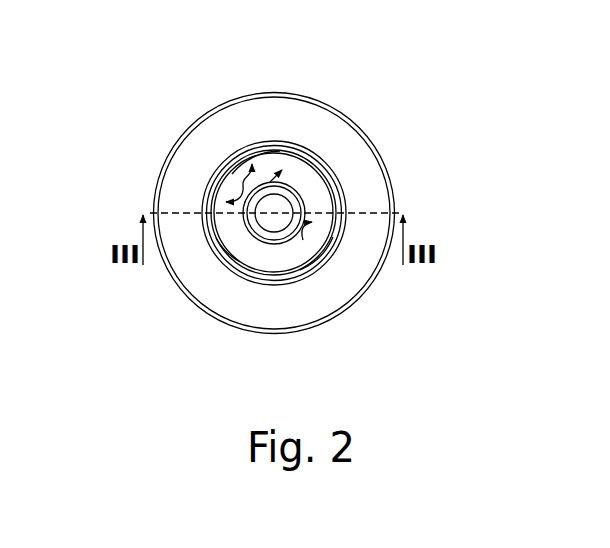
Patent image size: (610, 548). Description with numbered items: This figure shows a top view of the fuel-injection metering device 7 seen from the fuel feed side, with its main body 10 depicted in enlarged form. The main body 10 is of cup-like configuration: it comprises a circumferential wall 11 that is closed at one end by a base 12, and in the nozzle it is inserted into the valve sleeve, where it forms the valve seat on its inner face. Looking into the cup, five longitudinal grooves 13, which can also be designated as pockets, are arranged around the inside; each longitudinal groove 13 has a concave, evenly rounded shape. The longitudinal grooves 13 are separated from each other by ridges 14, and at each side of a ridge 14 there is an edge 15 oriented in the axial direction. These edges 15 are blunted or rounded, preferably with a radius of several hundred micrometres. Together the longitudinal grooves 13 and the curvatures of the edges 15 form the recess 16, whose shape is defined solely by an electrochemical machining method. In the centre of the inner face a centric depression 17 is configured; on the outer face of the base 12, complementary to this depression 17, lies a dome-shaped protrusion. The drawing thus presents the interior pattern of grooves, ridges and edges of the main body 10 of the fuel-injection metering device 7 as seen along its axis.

The fuel-injection metering device 7 is at (541, 50).
The main body 10 is at (486, 71).
The circumferential wall 11 is at (370, 174).
The base 12 is at (293, 167).
The longitudinal grooves 13 is at (242, 185).
The ridges 14 is at (277, 172).
The edges 15 is at (203, 208).
The recess 16 is at (270, 207).
The depression 17 is at (305, 165).